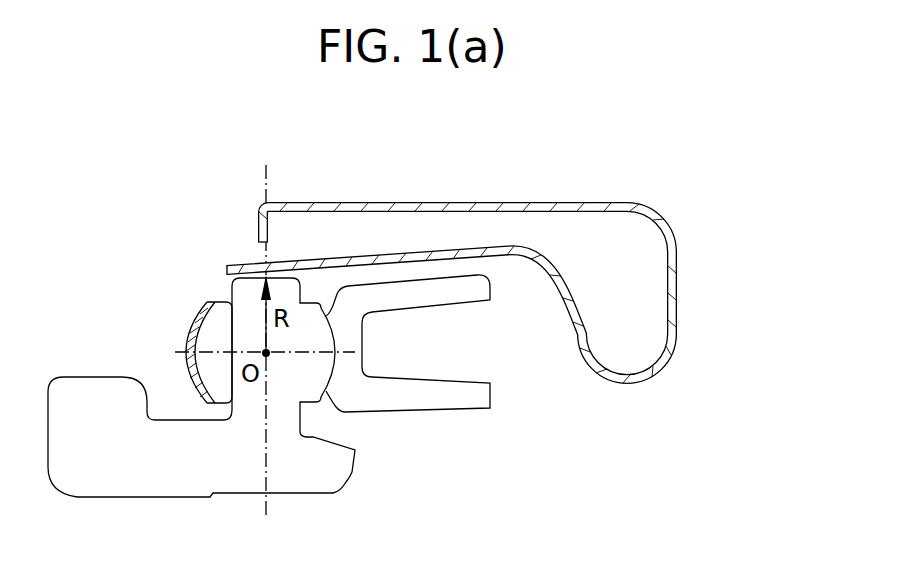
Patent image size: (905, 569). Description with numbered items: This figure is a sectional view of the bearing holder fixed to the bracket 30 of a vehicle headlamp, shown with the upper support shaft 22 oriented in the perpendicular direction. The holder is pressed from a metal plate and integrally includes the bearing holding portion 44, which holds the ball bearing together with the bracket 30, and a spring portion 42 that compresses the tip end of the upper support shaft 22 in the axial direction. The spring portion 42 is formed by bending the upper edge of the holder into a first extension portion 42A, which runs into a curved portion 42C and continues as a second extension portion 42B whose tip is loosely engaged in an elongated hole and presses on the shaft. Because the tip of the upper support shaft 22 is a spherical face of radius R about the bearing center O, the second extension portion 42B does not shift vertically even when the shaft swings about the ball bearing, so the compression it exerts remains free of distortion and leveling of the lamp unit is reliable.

The spring portion 42 is at (525, 262).
The first extension portion 42A is at (538, 202).
The second extension portion 42B is at (347, 255).
The curved portion 42C is at (680, 314).
The upper support shaft 22 is at (248, 298).
The bracket 30 is at (433, 400).
The bearing holding portion 44 is at (190, 323).